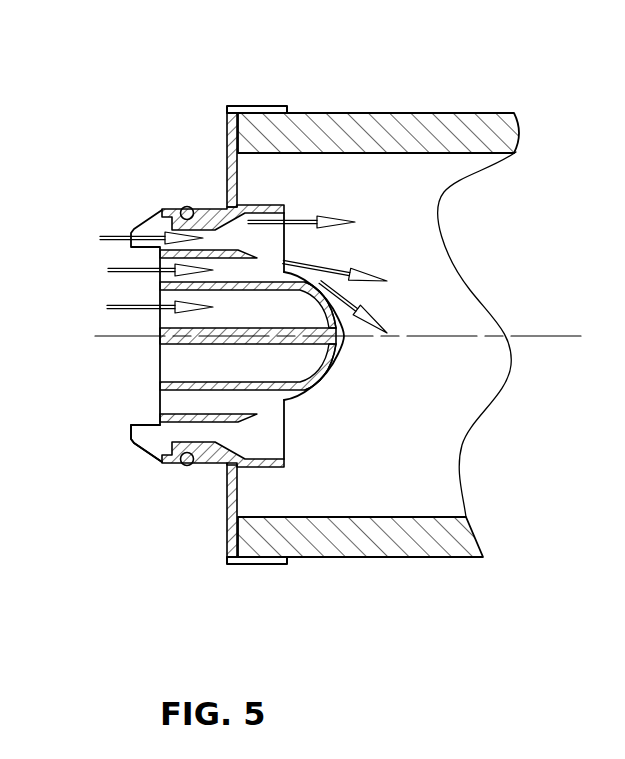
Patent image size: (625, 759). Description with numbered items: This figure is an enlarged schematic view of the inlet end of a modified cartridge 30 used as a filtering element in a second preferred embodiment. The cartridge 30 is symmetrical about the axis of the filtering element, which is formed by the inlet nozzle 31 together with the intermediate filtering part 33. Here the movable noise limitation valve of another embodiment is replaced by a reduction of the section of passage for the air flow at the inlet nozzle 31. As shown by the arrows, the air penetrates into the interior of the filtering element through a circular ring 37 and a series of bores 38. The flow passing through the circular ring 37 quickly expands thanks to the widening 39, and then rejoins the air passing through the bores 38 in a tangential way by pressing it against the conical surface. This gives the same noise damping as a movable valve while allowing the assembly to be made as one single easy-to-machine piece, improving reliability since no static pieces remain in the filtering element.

The modified cartridge 30 is at (424, 104).
The inlet nozzle 31 is at (228, 498).
The intermediate filtering part 33 is at (420, 541).
The circular ring 37 is at (157, 438).
The bores 38 is at (173, 362).
The widening 39 is at (270, 434).